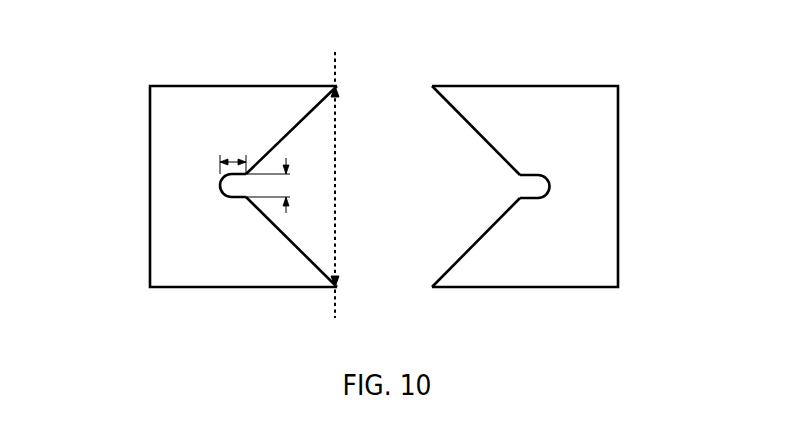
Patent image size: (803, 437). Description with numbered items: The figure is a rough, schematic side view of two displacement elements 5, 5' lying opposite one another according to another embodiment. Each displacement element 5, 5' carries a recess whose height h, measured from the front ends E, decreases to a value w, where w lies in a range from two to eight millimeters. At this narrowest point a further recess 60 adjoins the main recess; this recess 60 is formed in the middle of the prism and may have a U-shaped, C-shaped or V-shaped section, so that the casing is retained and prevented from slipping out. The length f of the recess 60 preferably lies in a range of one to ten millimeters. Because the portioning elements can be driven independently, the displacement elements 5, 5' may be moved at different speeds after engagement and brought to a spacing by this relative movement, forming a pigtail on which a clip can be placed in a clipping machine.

The displacement element 5 is at (243, 165).
The displacement element 5' is at (525, 165).
The recess 60 is at (230, 192).
The front end E is at (337, 86).
The height h is at (348, 188).
The length f is at (233, 154).
The width w is at (277, 185).